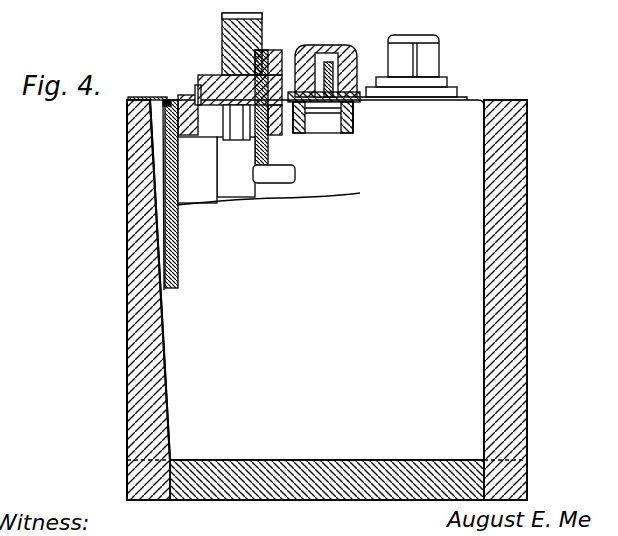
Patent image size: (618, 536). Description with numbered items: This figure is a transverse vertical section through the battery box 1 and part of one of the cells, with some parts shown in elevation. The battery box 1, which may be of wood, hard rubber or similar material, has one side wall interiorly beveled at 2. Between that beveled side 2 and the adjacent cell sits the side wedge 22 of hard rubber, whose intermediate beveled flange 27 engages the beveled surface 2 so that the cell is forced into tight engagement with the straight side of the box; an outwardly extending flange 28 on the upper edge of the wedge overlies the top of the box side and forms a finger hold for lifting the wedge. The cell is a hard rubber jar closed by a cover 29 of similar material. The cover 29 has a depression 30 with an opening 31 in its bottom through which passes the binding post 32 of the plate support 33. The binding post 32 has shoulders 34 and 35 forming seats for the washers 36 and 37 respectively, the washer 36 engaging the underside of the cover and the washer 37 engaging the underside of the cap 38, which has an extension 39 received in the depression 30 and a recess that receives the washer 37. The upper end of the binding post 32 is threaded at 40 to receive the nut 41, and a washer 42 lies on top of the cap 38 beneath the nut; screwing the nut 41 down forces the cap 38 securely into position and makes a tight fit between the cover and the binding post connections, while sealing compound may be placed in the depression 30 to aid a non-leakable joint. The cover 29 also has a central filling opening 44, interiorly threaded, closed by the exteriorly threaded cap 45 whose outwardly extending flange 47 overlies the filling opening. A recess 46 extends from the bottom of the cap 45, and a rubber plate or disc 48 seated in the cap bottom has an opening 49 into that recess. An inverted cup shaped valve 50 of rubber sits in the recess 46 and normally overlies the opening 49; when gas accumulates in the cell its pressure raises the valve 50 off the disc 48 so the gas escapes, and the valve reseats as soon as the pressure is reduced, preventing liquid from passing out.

The battery box 1 is at (512, 283).
The beveled side wall 2 is at (160, 290).
The side wedge 22 is at (170, 268).
The intermediate beveled flange 27 is at (160, 181).
The outwardly extending flange 28 is at (135, 99).
The cover 29 is at (185, 110).
The depression 30 is at (276, 122).
The opening 31 is at (218, 142).
The binding post 32 is at (242, 178).
The plate support 33 is at (282, 185).
The shoulder 34 is at (216, 186).
The shoulder 35 is at (190, 97).
The washer 36 is at (205, 165).
The washer 37 is at (274, 74).
The cap 38 is at (226, 76).
The extension 39 is at (165, 101).
The threaded end 40 is at (262, 42).
The nut 41 is at (222, 50).
The washer 42 is at (198, 80).
The filling opening 44 is at (322, 100).
The cap 45 is at (348, 55).
The recess 46 is at (322, 55).
The flange 47 is at (355, 100).
The plate or disc 48 is at (355, 123).
The opening 49 is at (315, 105).
The inverted cup shaped valve 50 is at (332, 58).